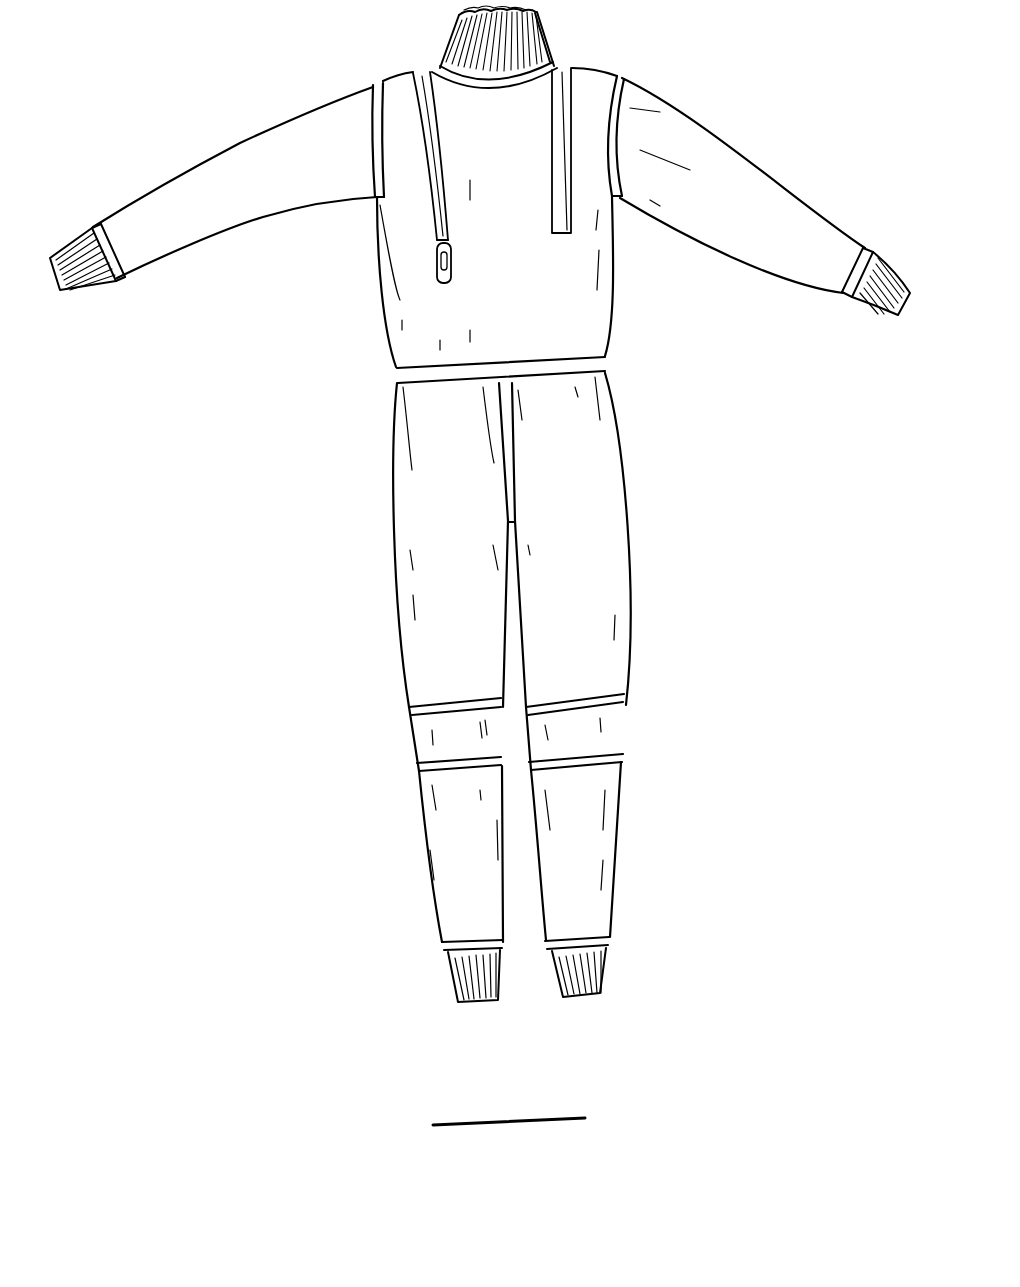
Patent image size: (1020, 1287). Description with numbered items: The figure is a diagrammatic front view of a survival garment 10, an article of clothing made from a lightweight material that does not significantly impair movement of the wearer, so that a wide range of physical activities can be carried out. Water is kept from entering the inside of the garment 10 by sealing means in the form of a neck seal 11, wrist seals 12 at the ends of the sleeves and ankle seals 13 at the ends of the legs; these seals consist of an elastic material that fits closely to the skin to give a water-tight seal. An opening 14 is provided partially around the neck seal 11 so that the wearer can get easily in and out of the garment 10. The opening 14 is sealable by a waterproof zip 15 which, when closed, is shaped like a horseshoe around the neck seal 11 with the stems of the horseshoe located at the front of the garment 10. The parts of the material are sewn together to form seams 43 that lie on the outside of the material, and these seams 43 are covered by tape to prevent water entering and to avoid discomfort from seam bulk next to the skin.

The survival garment 10 is at (379, 551).
The neck seal 11 is at (527, 62).
The wrist seals 12 is at (78, 235).
The ankle seals 13 is at (457, 976).
The opening 14 is at (415, 72).
The waterproof zip 15 is at (569, 232).
The seam 43 is at (373, 83).